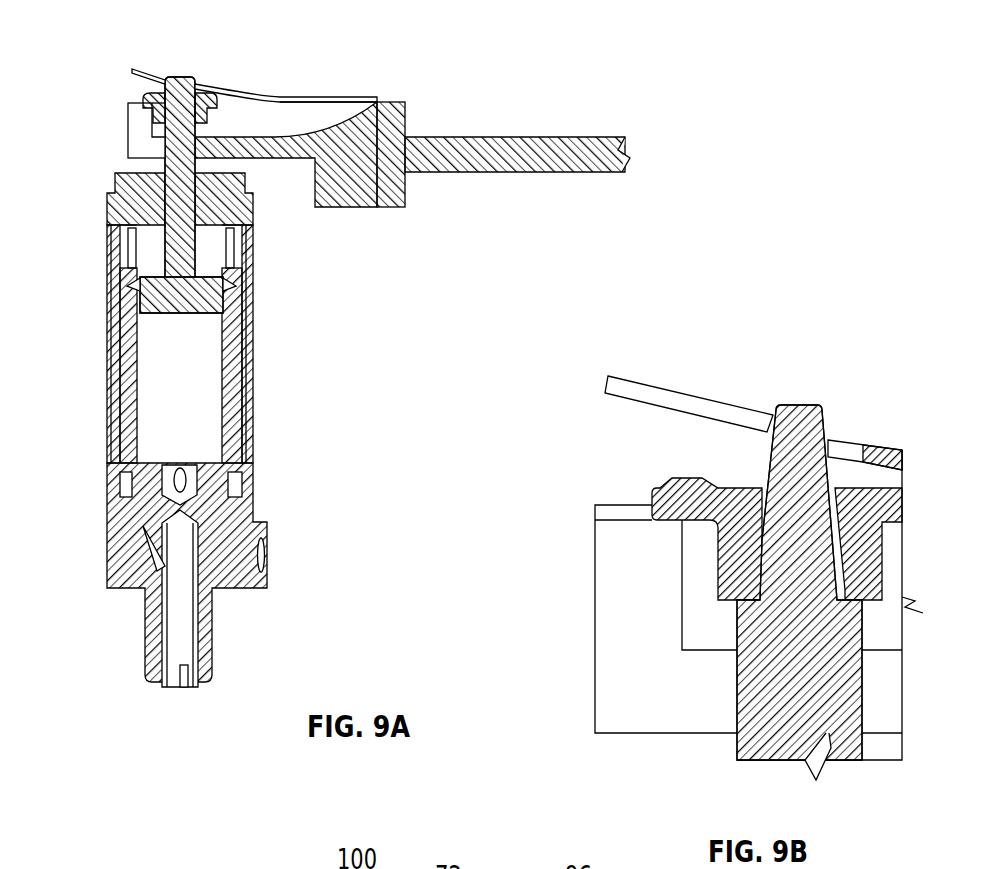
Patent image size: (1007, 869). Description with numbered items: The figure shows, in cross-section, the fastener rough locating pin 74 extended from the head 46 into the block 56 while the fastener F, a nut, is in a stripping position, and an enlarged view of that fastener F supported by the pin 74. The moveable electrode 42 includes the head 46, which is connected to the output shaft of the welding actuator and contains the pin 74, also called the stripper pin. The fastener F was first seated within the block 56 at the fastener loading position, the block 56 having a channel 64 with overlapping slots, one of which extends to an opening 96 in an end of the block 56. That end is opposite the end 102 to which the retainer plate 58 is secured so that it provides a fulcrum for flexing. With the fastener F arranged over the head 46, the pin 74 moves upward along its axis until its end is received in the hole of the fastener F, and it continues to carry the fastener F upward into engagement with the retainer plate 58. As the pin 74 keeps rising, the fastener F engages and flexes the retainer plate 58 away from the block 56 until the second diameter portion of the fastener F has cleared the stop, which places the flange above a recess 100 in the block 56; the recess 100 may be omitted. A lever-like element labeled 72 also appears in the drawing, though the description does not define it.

In FIG. 9A, the moveable electrode 42 is at (253, 387).
In FIG. 9A, the head 46 is at (120, 187).
In FIG. 9A, the block 56 is at (343, 200).
In FIG. 9B, the block 56 is at (683, 724).
In FIG. 9A, the retainer plate 58 is at (228, 90).
In FIG. 9B, the retainer plate 58 is at (882, 445).
In FIG. 9A, the channel 64 is at (305, 104).
In FIG. 9A, the lever 72 is at (148, 69).
In FIG. 9B, the lever 72 is at (677, 388).
In FIG. 9A, the fastener rough locating pin 74 is at (178, 232).
In FIG. 9B, the fastener rough locating pin 74 is at (833, 673).
In FIG. 9A, the opening 96 is at (140, 137).
In FIG. 9B, the opening 96 is at (603, 581).
In FIG. 9A, the recess 100 is at (137, 96).
In FIG. 9B, the recess 100 is at (625, 512).
In FIG. 9A, the end 102 is at (365, 112).
In FIG. 9A, the fastener F is at (207, 114).
In FIG. 9B, the fastener F is at (868, 563).